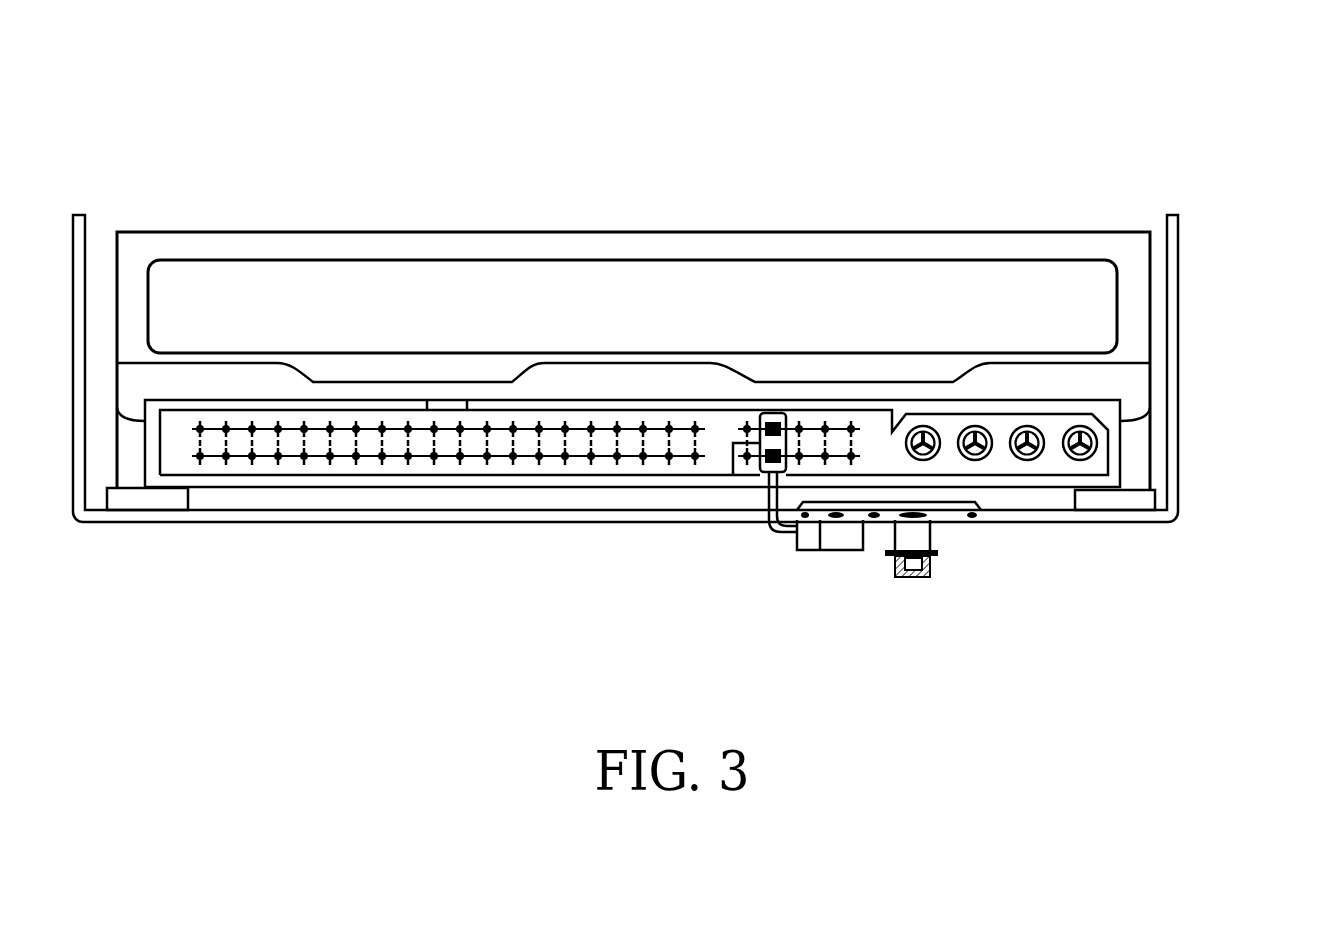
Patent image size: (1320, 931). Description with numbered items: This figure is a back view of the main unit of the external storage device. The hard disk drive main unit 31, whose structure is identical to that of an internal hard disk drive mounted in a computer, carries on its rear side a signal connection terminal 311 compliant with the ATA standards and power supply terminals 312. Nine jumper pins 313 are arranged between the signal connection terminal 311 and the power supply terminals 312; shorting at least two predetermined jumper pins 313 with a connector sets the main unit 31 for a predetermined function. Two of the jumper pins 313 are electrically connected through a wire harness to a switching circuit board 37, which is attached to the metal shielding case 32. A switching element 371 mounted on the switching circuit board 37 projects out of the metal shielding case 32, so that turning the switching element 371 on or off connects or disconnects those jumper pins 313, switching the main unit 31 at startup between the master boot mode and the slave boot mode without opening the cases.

The hard disk drive main unit 31 is at (873, 240).
The metal shielding case 32 is at (1180, 332).
The signal connection terminal 311 is at (427, 484).
The power supply terminals 312 is at (1028, 480).
The jumper pins 313 is at (827, 394).
The switching circuit board 37 is at (877, 522).
The switching element 371 is at (906, 580).